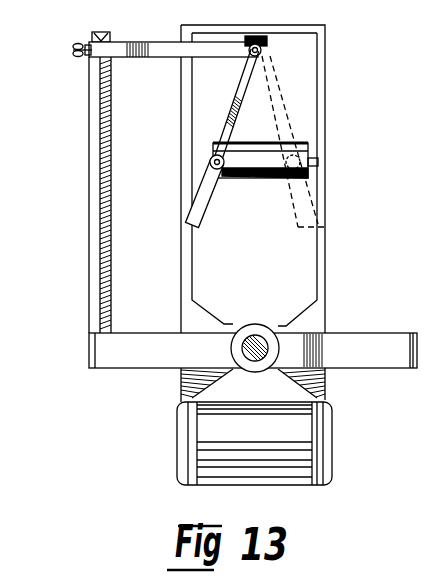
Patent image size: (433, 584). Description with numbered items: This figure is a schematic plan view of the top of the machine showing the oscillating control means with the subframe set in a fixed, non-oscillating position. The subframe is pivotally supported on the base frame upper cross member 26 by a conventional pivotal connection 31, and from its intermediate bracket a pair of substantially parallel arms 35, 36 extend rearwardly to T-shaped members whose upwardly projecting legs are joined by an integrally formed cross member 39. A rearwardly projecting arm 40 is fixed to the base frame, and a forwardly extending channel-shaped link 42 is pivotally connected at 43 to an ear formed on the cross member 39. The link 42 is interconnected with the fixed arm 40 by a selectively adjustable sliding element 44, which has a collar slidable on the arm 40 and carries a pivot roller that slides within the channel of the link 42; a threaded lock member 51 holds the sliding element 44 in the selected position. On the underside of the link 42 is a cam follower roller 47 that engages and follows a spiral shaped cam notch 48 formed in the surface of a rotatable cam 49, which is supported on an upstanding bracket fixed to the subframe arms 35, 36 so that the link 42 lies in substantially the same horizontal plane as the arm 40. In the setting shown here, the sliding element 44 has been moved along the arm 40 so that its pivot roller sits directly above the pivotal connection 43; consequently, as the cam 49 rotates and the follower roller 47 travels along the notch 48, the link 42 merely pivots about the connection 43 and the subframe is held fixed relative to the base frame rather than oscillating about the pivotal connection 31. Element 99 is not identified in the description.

The base frame upper cross member 26 is at (347, 337).
The pivotal connection 31 is at (253, 338).
The arm 35 is at (183, 237).
The arm 36 is at (322, 264).
The cross member 39 is at (292, 30).
The rearwardly projecting arm 40 is at (100, 128).
The channel-shaped link 42 is at (237, 107).
The pivotal connection 43 is at (259, 40).
The sliding element 44 is at (172, 42).
The cam follower roller 47 is at (210, 163).
The spiral shaped cam notch 48 is at (225, 182).
The rotatable cam 49 is at (273, 182).
The threaded lock member 51 is at (80, 44).
The motor housing 99 is at (330, 442).